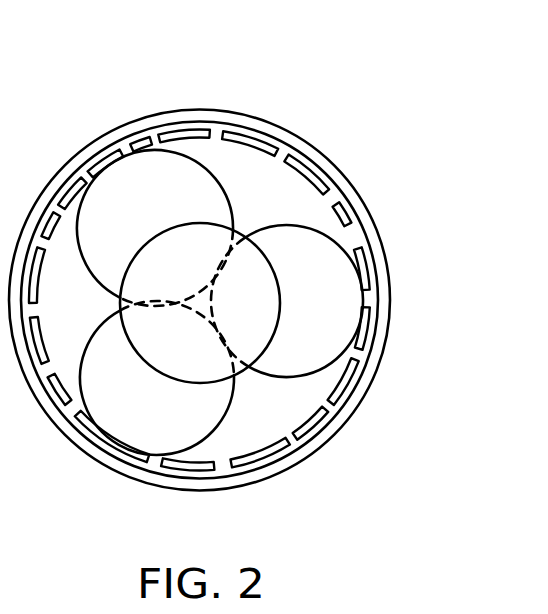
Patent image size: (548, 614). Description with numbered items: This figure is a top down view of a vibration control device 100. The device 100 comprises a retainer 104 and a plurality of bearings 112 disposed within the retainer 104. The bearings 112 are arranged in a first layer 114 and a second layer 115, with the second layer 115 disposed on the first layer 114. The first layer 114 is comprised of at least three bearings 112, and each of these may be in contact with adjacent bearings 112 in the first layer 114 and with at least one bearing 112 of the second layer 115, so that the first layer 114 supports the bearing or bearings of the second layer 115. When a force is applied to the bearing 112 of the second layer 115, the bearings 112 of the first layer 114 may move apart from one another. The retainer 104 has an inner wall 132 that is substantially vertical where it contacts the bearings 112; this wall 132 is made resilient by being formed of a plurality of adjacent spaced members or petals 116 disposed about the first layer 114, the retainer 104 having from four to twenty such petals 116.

The device 100 is at (299, 108).
The retainer 104 is at (350, 187).
The bearings 112 is at (234, 231).
The first layer of bearings 114 is at (338, 223).
The second layer of bearings 115 is at (156, 383).
The petals 116 is at (131, 143).
The inner wall 132 is at (385, 300).